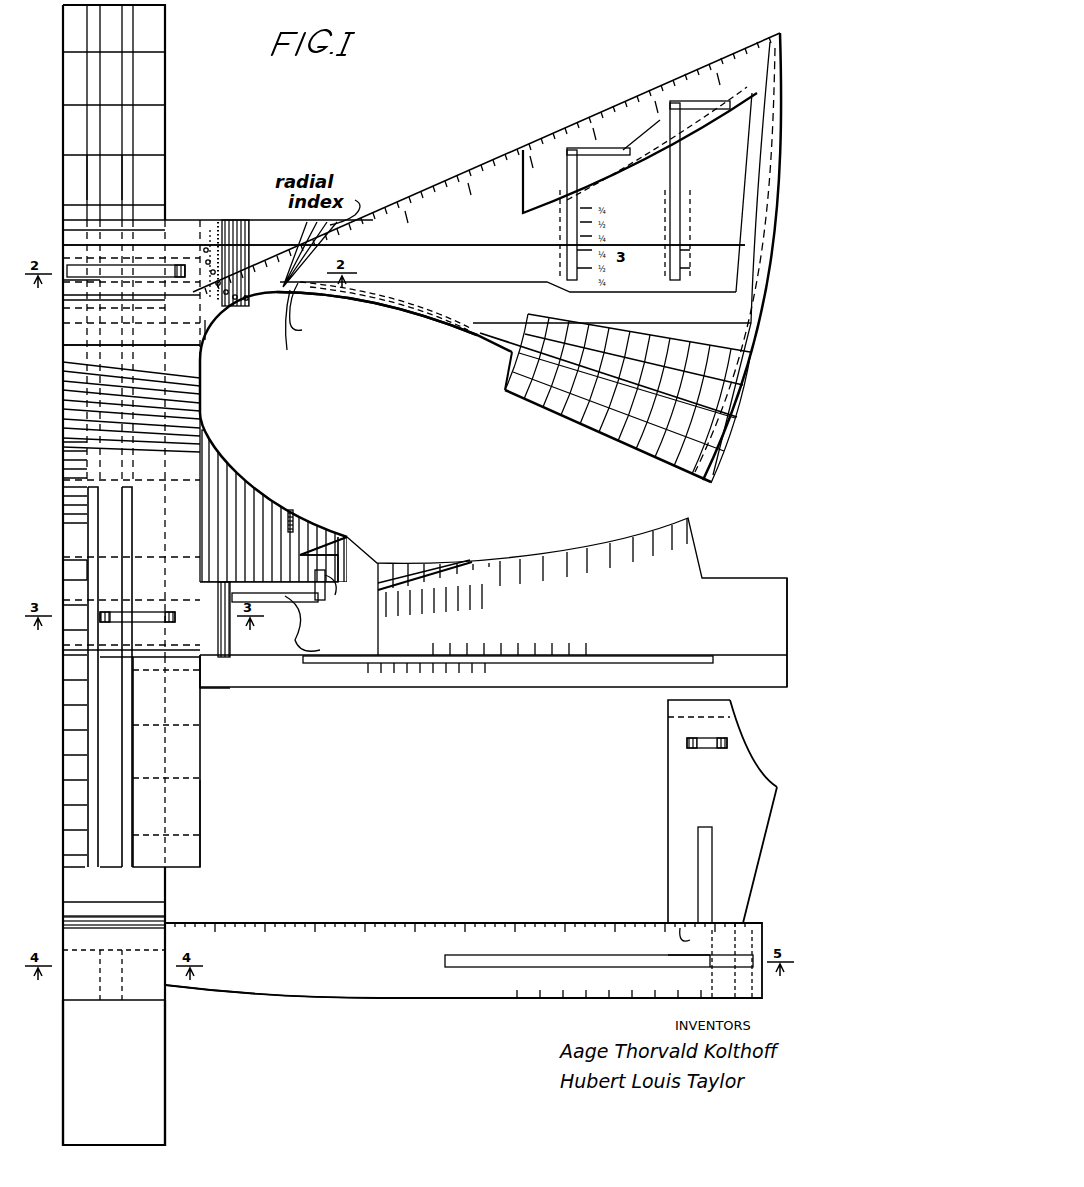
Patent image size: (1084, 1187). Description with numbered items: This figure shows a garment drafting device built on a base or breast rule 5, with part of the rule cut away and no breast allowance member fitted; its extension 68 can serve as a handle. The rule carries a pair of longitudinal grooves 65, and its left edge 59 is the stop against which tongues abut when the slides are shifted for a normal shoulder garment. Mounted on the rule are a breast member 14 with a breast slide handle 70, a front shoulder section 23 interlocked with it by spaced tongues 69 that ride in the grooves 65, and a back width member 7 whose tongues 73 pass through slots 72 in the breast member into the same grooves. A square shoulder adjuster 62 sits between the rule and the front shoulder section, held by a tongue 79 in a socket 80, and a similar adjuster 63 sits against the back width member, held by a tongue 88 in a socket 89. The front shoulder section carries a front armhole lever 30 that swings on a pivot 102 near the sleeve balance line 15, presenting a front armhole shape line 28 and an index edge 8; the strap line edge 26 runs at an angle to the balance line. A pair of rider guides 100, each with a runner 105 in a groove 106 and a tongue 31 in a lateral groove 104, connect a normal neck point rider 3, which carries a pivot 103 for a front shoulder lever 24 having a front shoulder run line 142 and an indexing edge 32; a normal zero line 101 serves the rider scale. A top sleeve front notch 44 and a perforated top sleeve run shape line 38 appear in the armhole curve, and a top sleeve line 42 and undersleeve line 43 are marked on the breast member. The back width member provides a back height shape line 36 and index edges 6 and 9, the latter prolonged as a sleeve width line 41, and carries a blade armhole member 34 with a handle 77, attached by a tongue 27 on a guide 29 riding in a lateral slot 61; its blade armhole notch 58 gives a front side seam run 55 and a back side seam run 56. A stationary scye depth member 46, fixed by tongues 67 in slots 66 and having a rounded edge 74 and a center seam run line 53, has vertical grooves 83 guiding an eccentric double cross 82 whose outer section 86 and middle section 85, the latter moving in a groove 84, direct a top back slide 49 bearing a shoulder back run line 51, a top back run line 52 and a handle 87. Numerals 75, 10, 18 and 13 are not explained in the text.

The base rule 5 is at (155, 80).
The left edge of base rule 59 is at (63, 45).
The longitudinal grooves 65 is at (130, 185).
The spaced tongues 69 is at (95, 240).
The top sleeve line 42 is at (62, 242).
The slide bar 75 is at (126, 265).
The breast slide handle 70 is at (63, 282).
The sleeve balance line 15 is at (63, 305).
The undersleeve line 43 is at (63, 345).
The front shoulder section 23 is at (263, 235).
The square shoulder adjuster 62 is at (180, 235).
The tongue 79 is at (230, 337).
The socket 80 is at (227, 337).
The top sleeve front notch 44 is at (246, 300).
The top sleeve run shape line 38 is at (210, 320).
The back height shape line 36 is at (210, 340).
The pivot 102 is at (276, 327).
The index edge 8 is at (310, 282).
The front armhole shape line 28 is at (390, 312).
The front armhole lever 30 is at (420, 305).
The strap line edge 26 is at (515, 160).
The normal neck point rider 3 is at (523, 190).
The tongue 31 is at (641, 135).
The rider guides 100 is at (565, 220).
The laterally extending groove 104 is at (653, 119).
The normal zero line 101 is at (635, 255).
The runner 105 is at (566, 252).
The longitudinally extending groove 106 is at (566, 272).
The pivot 103 is at (786, 20).
The front shoulder run line 142 is at (770, 280).
The front shoulder lever 24 is at (688, 335).
The indexing edge 32 is at (515, 372).
The handle 77 is at (300, 510).
The blade armhole member 34 is at (305, 540).
The front side seam run 55 is at (325, 548).
The blade armhole notch 58 is at (345, 548).
The back side seam run 56 is at (352, 557).
The tongue 27 is at (323, 600).
The guide 29 is at (330, 598).
The tongue 88 is at (232, 635).
The socket 89 is at (210, 640).
The laterally extending slot 61 is at (317, 626).
The sleeve width line 41 is at (672, 655).
The back width member 7 is at (755, 590).
The square shoulder adjuster 63 is at (200, 688).
The vertical bars 10 is at (110, 677).
The slide bar 18 is at (100, 612).
The index edge 6 is at (100, 580).
The spaced tongues 73 is at (120, 638).
The index edge 9 is at (100, 660).
The breast member 14 is at (178, 748).
The block edge 13 is at (200, 810).
The spaced slots 72 is at (128, 860).
The rounded edge 74 is at (70, 918).
The slots 66 is at (120, 945).
The tongues 67 is at (95, 990).
The extension 68 is at (125, 1060).
The scye depth member 46 is at (395, 995).
The scye depth center seam run line 53 is at (328, 1008).
The vertical space grooves 83 is at (472, 960).
The eccentric double cross 82 is at (705, 968).
The outer section 86 is at (668, 955).
The middle section 85 is at (680, 928).
The top back slide 49 is at (705, 795).
The shoulder back run line 51 is at (745, 740).
The top back run line 52 is at (745, 880).
The handle 87 is at (728, 745).
The groove 84 is at (705, 857).